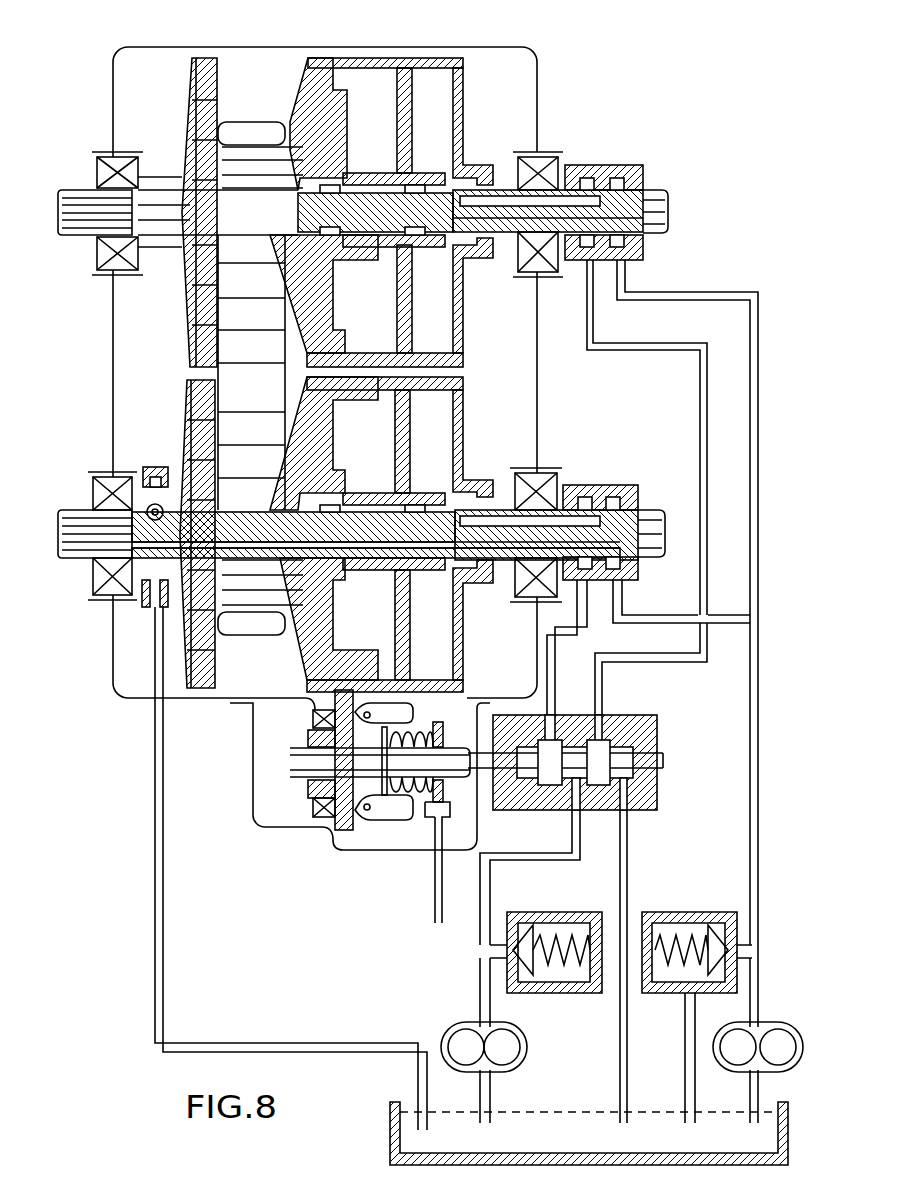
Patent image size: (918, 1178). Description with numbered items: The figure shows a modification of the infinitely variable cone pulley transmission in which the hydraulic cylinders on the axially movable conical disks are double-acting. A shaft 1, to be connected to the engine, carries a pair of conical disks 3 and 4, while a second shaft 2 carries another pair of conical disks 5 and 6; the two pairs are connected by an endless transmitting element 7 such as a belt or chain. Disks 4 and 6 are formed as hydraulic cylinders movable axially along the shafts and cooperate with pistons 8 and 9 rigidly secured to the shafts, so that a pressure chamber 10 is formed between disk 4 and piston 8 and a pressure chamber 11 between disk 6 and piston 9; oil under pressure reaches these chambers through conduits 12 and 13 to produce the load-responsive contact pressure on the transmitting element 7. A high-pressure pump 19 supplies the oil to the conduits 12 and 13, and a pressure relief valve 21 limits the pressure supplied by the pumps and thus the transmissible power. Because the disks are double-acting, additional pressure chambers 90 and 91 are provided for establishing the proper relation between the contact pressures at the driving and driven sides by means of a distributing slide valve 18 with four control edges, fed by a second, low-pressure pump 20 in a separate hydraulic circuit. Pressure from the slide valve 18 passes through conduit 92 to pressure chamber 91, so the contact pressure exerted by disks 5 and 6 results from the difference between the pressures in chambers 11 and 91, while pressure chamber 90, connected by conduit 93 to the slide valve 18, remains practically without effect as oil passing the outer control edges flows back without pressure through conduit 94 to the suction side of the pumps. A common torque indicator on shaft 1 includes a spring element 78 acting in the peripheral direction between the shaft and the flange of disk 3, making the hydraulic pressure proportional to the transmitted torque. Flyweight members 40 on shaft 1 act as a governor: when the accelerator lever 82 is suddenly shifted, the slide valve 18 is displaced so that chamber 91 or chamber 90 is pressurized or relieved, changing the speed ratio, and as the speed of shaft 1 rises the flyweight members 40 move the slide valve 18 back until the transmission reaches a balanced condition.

The shaft 1 is at (643, 537).
The second shaft 2 is at (660, 205).
The conical disk 3 is at (202, 675).
The conical disk 4 is at (303, 672).
The conical disk 5 is at (200, 78).
The conical disk 6 is at (317, 78).
The transmitting element 7 is at (248, 625).
The piston 8 is at (402, 442).
The piston 9 is at (413, 108).
The pressure chamber 10 is at (367, 470).
The pressure chamber 11 is at (370, 100).
The conduit 12 is at (645, 620).
The conduit 13 is at (752, 450).
The slide valve 18 is at (620, 752).
The pump 19 is at (738, 1043).
The pump 20 is at (507, 1043).
The pressure relief valve 21 is at (577, 940).
The flyweight member 40 is at (385, 813).
The spring element 78 is at (133, 490).
The accelerator lever 82 is at (433, 893).
The pressure chamber 90 is at (423, 645).
The pressure chamber 91 is at (430, 335).
The conduit 92 is at (703, 422).
The conduit 93 is at (570, 630).
The conduit 94 is at (627, 852).